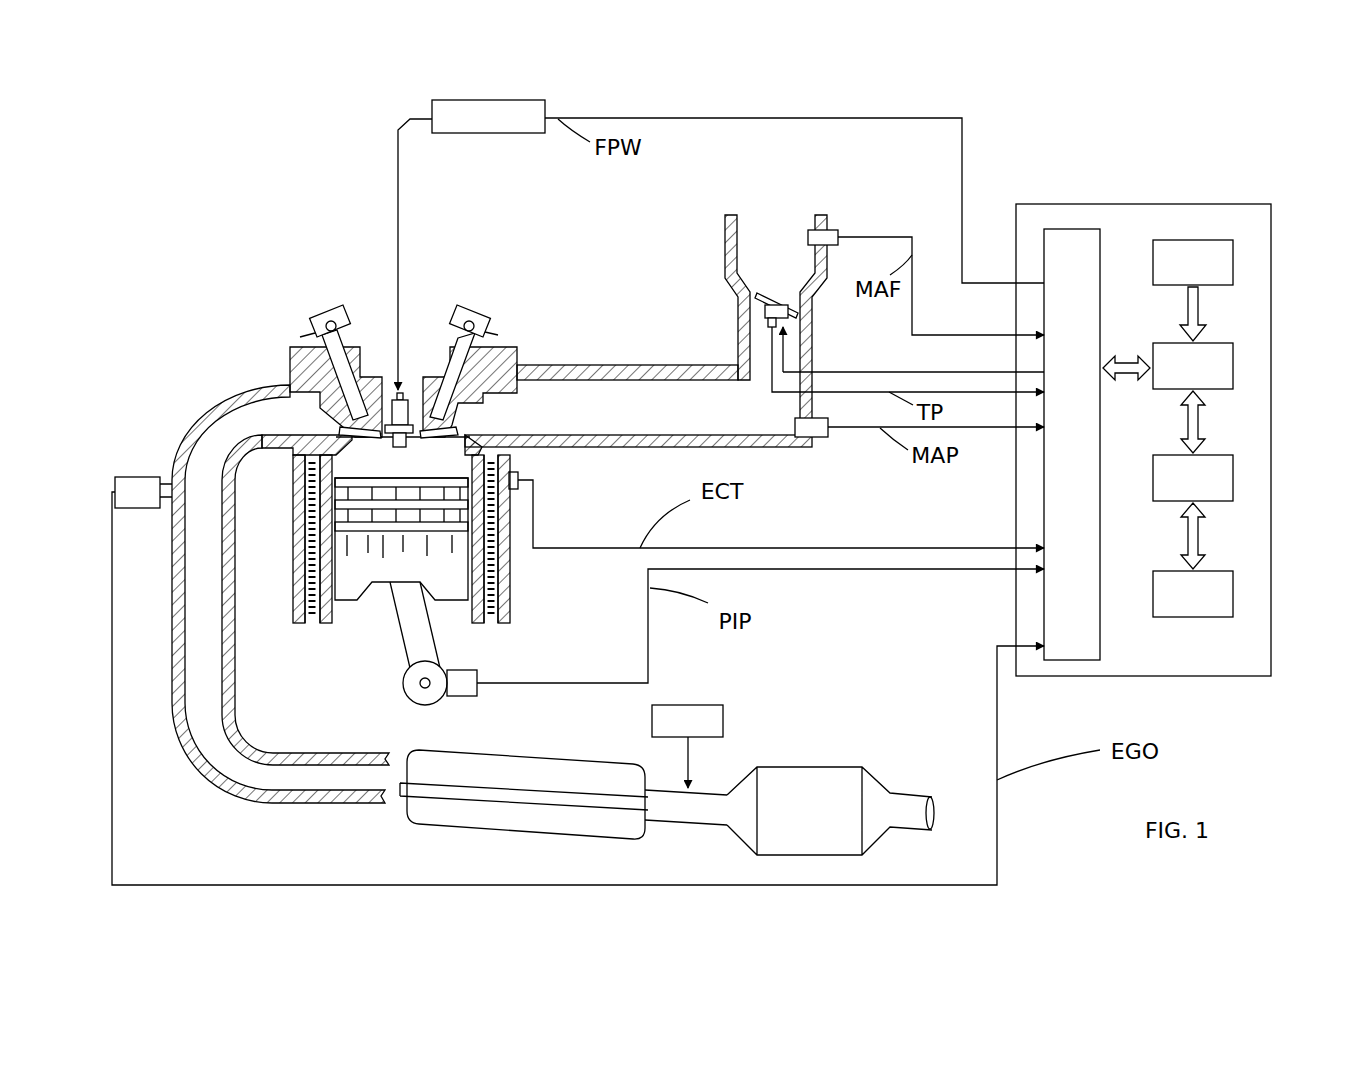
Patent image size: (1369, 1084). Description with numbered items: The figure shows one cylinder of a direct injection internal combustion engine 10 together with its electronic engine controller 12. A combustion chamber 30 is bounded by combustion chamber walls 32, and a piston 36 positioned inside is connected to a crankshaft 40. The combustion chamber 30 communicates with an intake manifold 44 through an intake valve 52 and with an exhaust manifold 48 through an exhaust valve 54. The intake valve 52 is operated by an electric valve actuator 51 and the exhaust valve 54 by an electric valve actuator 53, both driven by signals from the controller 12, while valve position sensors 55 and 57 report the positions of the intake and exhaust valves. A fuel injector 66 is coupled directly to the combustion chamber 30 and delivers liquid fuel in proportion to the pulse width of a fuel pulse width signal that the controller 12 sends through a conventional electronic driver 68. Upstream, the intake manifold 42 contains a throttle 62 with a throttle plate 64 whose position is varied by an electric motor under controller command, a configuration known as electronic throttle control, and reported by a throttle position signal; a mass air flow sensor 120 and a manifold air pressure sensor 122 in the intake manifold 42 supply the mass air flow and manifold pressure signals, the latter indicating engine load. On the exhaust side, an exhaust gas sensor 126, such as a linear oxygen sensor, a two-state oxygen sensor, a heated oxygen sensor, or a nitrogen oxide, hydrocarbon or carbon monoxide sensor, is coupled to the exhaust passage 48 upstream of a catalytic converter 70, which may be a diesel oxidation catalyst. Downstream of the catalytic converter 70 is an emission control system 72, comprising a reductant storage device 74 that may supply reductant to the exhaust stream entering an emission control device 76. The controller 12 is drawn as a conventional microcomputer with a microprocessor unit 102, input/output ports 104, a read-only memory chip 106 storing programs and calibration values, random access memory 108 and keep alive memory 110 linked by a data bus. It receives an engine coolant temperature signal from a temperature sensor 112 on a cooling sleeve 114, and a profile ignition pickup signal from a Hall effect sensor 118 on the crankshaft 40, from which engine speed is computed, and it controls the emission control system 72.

The direct injection internal combustion engine 10 is at (220, 292).
The electronic engine controller 12 is at (1258, 204).
The combustion chamber 30 is at (372, 460).
The combustion chamber walls 32 is at (338, 627).
The piston 36 is at (383, 567).
The crankshaft 40 is at (415, 702).
The intake manifold 42 is at (762, 270).
The intake manifold 44 is at (689, 425).
The exhaust manifold 48 is at (244, 425).
The electric valve actuator 51 is at (462, 318).
The intake valve 52 is at (455, 420).
The electric valve actuator 53 is at (342, 312).
The exhaust valve 54 is at (350, 425).
The valve position sensor 55 is at (498, 335).
The valve position sensor 57 is at (312, 334).
The throttle 62 is at (800, 300).
The throttle plate 64 is at (757, 297).
The fuel injector 66 is at (407, 402).
The electronic driver 68 is at (522, 134).
The catalytic converter 70 is at (558, 755).
The emission control system 72 is at (863, 684).
The reductant storage device 74 is at (687, 702).
The emission control device 76 is at (840, 765).
The microprocessor unit 102 is at (1233, 362).
The input/output ports 104 is at (1100, 237).
The read-only memory chip 106 is at (1233, 258).
The random access memory 108 is at (1233, 476).
The keep alive memory 110 is at (1233, 592).
The temperature sensor 112 is at (520, 482).
The cooling sleeve 114 is at (493, 570).
The Hall effect sensor 118 is at (463, 695).
The mass air flow sensor 120 is at (825, 230).
The manifold air pressure sensor 122 is at (822, 437).
The exhaust gas sensor 126 is at (115, 478).